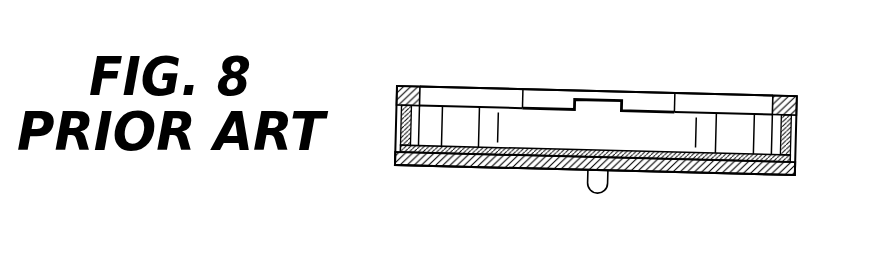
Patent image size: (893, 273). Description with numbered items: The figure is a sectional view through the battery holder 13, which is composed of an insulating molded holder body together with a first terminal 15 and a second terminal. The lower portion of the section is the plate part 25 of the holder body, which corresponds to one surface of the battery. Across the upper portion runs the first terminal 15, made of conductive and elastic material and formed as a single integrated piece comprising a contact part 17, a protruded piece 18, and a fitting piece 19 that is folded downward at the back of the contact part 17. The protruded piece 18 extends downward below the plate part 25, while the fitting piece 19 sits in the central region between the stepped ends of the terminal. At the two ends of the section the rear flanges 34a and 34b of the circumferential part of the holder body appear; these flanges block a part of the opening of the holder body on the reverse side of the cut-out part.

The battery holder 13 is at (450, 168).
The first terminal 15 is at (547, 113).
The contact part 17 is at (683, 135).
The protruded piece 18 is at (600, 193).
The fitting piece 19 is at (600, 103).
The plate part 25 is at (533, 172).
The rear flange 34a is at (521, 96).
The rear flange 34b is at (688, 93).